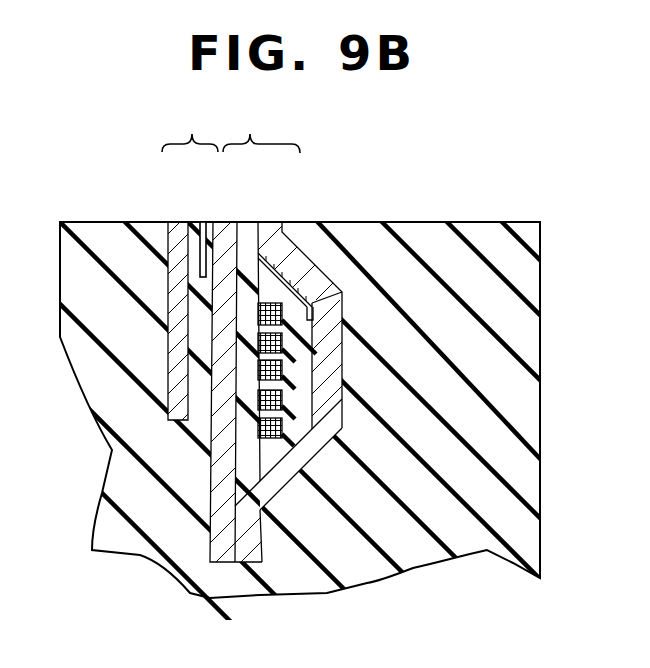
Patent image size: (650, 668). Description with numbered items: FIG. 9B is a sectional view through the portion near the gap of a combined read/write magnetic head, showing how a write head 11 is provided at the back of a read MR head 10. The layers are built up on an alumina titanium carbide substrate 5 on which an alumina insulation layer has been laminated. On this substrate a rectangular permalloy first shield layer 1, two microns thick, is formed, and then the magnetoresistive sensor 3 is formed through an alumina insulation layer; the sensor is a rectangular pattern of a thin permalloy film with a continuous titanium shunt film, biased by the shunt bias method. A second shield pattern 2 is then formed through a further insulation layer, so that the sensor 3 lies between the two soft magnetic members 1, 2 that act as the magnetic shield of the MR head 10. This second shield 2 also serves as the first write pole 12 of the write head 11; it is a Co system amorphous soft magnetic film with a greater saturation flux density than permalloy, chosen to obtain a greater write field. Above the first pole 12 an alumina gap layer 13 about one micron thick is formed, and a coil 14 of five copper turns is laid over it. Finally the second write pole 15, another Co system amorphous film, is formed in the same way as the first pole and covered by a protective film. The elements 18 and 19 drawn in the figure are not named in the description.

The substrate 5 is at (106, 240).
The first shield layer 1 is at (177, 222).
The magnetoresistive sensor 3 is at (210, 203).
The second shield layer 2 is at (227, 222).
The first write pole 12 is at (309, 361).
The read MR head 10 is at (190, 124).
The write head 11 is at (261, 125).
The gap layer 13 is at (245, 222).
The coil 14 is at (268, 302).
The second write pole 15 is at (297, 257).
The buried wiring 18 is at (300, 402).
The side wall film 19 is at (314, 312).